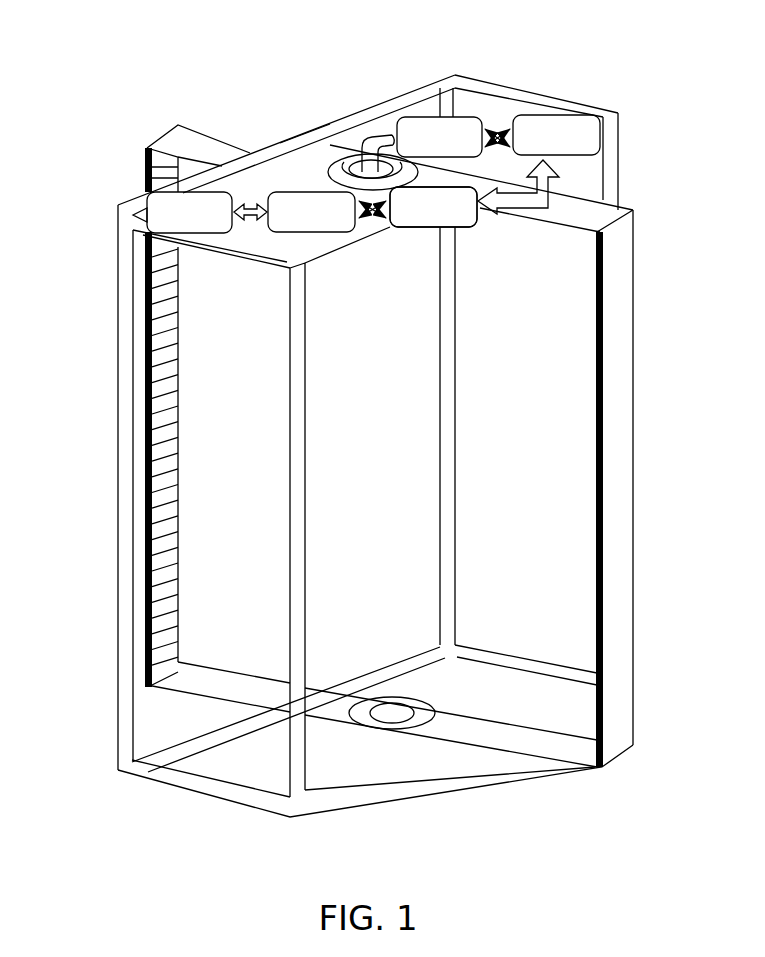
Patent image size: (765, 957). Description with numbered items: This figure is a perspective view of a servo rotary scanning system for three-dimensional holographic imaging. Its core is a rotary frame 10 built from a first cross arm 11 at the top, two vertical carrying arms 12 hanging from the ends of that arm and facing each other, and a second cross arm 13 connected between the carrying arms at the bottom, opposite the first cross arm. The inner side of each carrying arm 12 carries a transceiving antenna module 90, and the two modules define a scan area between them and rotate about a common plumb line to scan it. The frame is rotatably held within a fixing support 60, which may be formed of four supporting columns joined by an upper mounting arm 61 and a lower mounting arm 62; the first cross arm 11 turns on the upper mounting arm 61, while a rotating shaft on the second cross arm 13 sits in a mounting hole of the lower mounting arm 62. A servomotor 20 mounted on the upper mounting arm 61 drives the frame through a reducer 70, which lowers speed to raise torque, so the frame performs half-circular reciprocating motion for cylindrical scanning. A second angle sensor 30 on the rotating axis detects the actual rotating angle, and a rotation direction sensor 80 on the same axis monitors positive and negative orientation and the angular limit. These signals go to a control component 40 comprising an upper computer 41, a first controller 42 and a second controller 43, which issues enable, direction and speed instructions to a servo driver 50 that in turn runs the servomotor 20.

The rotary frame 10 is at (160, 133).
The first cross arm 11 is at (233, 150).
The carrying arms 12 is at (625, 310).
The second cross arm 13 is at (545, 740).
The servomotor 20 is at (448, 72).
The second angle sensor 30 is at (297, 133).
The control component 40 is at (420, 230).
The upper computer 41 is at (172, 210).
The first controller 42 is at (315, 212).
The second controller 43 is at (440, 208).
The servo driver 50 is at (582, 123).
The fixing support 60 is at (290, 423).
The upper mounting arm 61 is at (358, 135).
The lower mounting arm 62 is at (372, 742).
The reducer 70 is at (398, 92).
The rotation direction sensor 80 is at (352, 126).
The transceiving antenna modules 90 is at (158, 451).